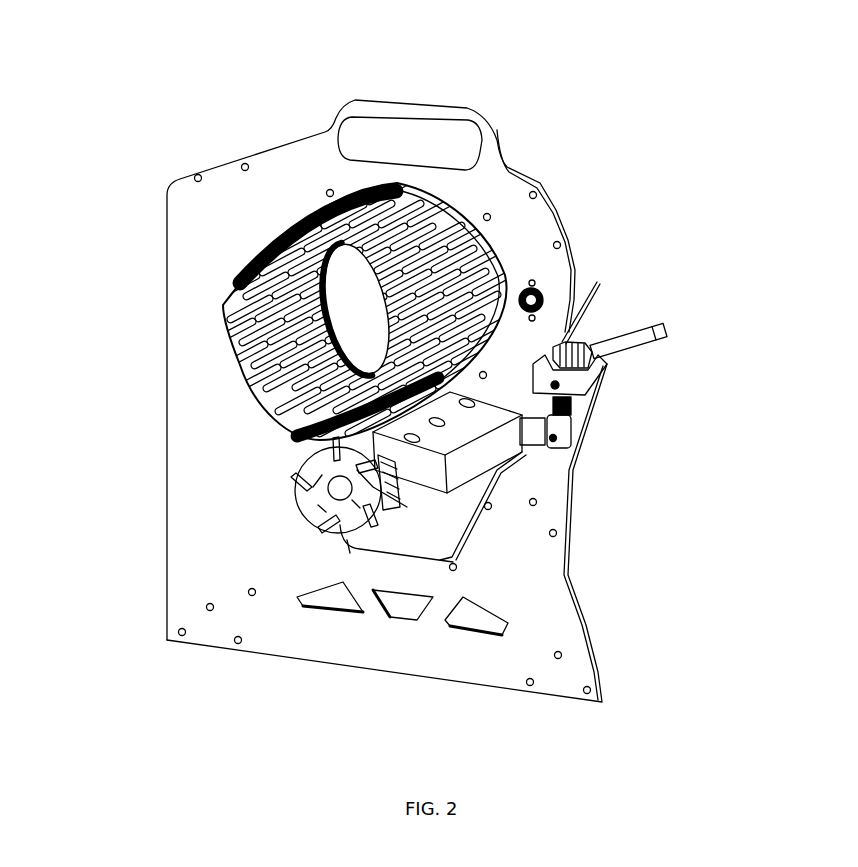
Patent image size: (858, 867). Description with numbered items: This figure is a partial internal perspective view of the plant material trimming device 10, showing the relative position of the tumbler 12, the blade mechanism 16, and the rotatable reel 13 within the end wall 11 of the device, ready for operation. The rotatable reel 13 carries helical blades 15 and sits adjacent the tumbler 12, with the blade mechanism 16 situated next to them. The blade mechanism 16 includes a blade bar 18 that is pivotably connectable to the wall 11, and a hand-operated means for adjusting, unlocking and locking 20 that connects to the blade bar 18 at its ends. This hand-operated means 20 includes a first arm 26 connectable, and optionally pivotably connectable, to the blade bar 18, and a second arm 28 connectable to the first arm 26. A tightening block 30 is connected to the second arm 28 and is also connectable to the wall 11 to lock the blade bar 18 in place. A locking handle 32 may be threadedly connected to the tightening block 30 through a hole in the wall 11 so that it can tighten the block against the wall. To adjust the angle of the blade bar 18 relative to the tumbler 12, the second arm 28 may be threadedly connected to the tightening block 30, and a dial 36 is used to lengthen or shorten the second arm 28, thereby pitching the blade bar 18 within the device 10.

The plant material trimming device 10 is at (700, 119).
The wall 11 is at (224, 478).
The tumbler 12 is at (462, 208).
The rotatable reel 13 is at (352, 500).
The helical blades 15 is at (395, 500).
The blade mechanism 16 is at (513, 478).
The blade bar 18 is at (497, 387).
The hand-operated means for adjusting, unlocking and locking 20 is at (593, 340).
The first arm 26 is at (537, 443).
The second arm 28 is at (577, 420).
The tightening block 30 is at (580, 388).
The locking handle 32 is at (620, 352).
The dial 36 is at (600, 284).